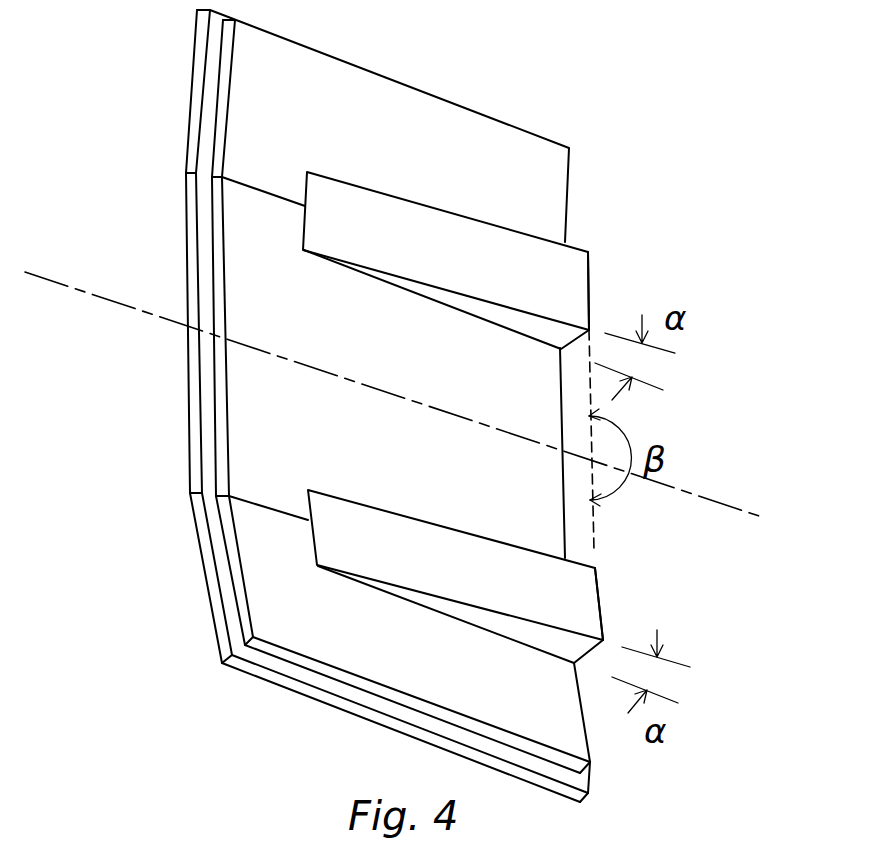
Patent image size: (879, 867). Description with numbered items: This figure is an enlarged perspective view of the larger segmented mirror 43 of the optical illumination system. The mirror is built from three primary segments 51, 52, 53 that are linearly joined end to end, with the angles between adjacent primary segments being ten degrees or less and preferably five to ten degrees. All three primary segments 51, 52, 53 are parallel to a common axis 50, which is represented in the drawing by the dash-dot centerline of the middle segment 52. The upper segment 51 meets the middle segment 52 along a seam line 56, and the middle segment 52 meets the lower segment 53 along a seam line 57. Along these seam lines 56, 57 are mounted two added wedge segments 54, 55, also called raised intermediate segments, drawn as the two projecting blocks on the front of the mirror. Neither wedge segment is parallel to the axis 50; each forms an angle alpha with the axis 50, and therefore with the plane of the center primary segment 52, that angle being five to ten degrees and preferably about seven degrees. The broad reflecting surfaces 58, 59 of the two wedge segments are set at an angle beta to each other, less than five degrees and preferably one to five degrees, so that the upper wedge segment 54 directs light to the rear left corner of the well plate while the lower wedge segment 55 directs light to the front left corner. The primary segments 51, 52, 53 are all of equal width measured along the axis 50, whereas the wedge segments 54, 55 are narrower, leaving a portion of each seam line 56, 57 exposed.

The larger segmented mirror 43 is at (405, 406).
The common axis 50 is at (722, 502).
The primary segment 51 is at (265, 107).
The primary segment 52 is at (258, 278).
The primary segment 53 is at (268, 590).
The upper wedge segment 54 is at (590, 282).
The lower wedge segment 55 is at (598, 596).
The seam line 56 is at (257, 192).
The seam line 57 is at (258, 505).
The broad surface 58 is at (434, 254).
The broad surface 59 is at (438, 571).